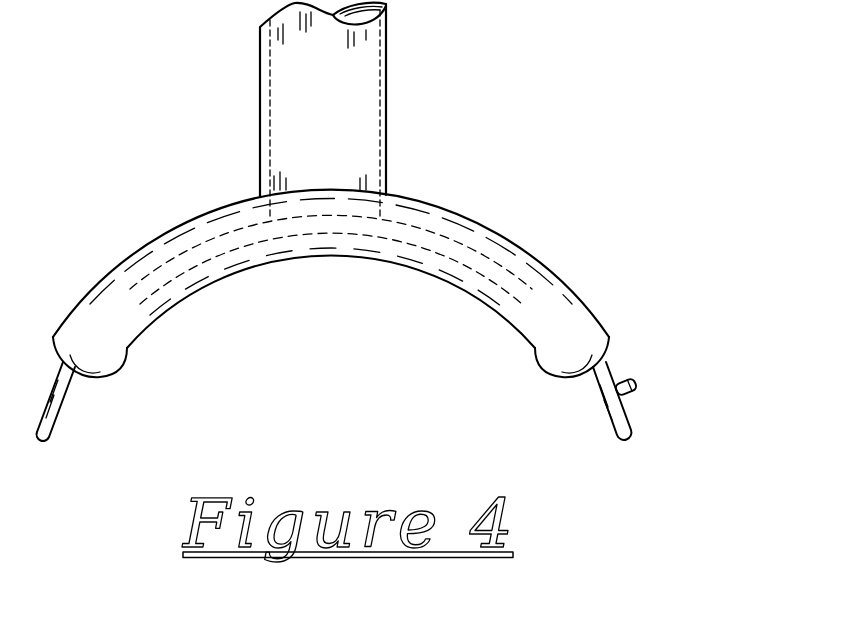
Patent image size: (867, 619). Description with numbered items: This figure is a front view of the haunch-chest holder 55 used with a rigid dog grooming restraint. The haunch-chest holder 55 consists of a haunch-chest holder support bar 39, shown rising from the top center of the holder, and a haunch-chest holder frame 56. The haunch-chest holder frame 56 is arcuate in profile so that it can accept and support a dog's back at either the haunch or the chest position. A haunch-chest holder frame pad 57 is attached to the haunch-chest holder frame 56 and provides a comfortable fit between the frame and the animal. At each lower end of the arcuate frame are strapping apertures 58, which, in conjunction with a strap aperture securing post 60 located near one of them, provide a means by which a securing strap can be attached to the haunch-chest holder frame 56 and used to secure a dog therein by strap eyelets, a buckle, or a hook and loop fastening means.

The haunch-chest holder support bar 39 is at (370, 85).
The haunch-chest holder 55 is at (175, 122).
The haunch-chest holder frame 56 is at (522, 277).
The haunch-chest holder frame pad 57 is at (113, 268).
The strapping apertures 58 is at (53, 423).
The strap aperture securing post 60 is at (633, 381).